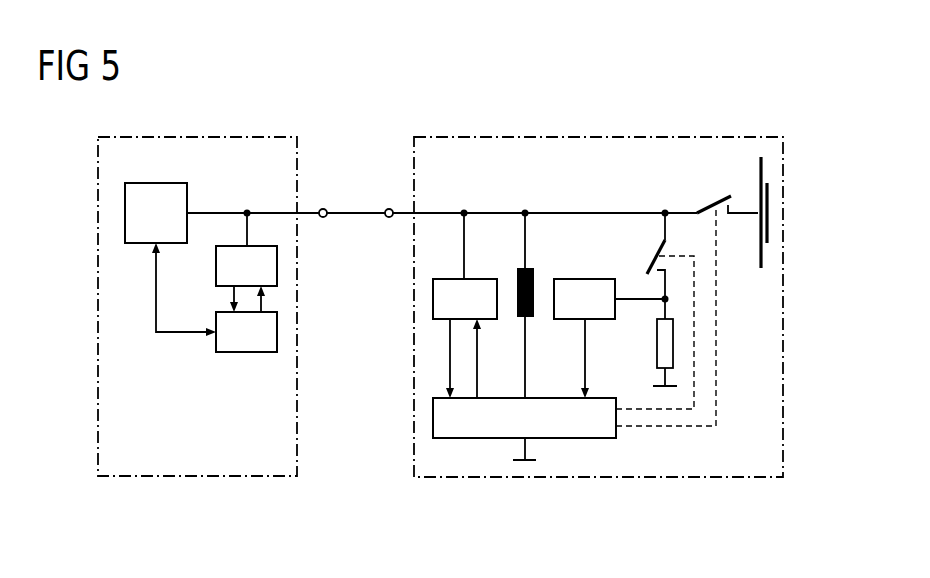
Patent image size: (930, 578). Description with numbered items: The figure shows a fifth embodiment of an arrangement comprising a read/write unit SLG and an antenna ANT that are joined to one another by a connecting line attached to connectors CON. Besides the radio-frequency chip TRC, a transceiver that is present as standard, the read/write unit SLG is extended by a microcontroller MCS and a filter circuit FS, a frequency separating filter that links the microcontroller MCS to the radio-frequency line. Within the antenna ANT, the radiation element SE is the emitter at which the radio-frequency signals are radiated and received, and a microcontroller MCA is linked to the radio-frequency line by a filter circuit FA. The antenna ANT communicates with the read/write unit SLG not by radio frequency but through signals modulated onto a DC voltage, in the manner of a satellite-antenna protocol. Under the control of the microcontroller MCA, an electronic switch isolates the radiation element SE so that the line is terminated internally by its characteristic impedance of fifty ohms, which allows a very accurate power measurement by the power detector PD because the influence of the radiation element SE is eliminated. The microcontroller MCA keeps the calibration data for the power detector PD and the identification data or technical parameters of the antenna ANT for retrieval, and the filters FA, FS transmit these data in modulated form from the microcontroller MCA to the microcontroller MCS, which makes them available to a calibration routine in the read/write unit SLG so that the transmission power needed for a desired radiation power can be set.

The radio-frequency chip TRC is at (125, 213).
The filter circuit FS is at (277, 267).
The microcontroller MCS is at (246, 352).
The read/write unit SLG is at (220, 476).
The connectors CON is at (388, 209).
The filter circuit FA is at (433, 297).
The power detector PD is at (588, 279).
The microcontroller MCA is at (433, 412).
The radiation element SE is at (770, 225).
The antenna ANT is at (575, 478).